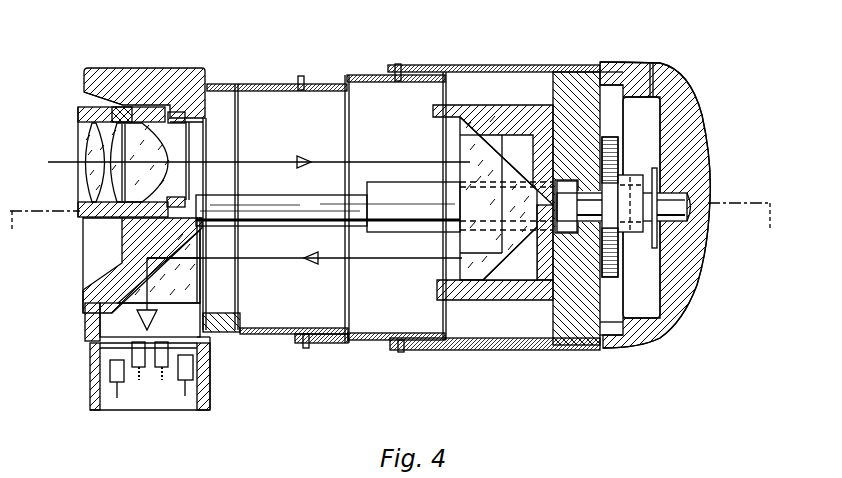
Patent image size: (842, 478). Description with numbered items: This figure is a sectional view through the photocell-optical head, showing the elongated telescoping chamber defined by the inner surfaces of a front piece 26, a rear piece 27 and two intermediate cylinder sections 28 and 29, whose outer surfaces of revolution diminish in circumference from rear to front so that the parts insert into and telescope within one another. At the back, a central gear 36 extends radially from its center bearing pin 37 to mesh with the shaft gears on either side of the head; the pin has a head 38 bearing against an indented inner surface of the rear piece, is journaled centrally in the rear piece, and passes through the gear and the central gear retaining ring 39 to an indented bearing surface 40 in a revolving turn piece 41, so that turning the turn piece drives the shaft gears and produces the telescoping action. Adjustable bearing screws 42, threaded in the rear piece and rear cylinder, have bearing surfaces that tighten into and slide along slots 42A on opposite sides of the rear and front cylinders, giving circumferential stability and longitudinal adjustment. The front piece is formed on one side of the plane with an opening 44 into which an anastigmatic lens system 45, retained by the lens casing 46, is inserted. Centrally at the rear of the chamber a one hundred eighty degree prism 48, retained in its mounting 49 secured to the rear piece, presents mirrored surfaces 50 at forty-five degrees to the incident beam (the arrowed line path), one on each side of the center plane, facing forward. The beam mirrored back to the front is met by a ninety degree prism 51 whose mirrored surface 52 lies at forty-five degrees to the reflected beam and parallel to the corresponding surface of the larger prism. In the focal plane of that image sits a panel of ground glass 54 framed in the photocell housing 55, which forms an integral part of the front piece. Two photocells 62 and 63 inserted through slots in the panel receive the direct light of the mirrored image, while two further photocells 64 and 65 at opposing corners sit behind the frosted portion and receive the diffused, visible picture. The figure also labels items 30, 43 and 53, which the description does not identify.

The front piece 26 is at (143, 70).
The rear piece 27 is at (495, 64).
The intermediate cylinder section 28 is at (388, 82).
The intermediate cylinder section 29 is at (292, 92).
The lens barrel 30 is at (248, 203).
The central gear 36 is at (616, 182).
The center bearing pin 37 is at (668, 206).
The head 38 is at (528, 292).
The central gear retaining ring 39 is at (612, 185).
The indented bearing surface 40 is at (706, 187).
The revolving turn piece 41 is at (697, 133).
The adjustable bearing screws 42 is at (305, 72).
The slots 42A is at (258, 82).
The section line 43 is at (390, 231).
The opening 44 is at (120, 106).
The anastigmatic lens system 45 is at (78, 178).
The lens casing 46 is at (82, 121).
The 180° prism 48 is at (470, 148).
The mounting 49 is at (498, 115).
The reflecting or mirrored surfaces 50 is at (486, 151).
The 90° prism 51 is at (190, 261).
The mirrored surface 52 is at (162, 322).
The prism support 53 is at (128, 245).
The panel of ground glass 54 is at (204, 367).
The photocell housing 55 is at (96, 386).
The photocell 62 is at (139, 382).
The photocell 63 is at (163, 382).
The photocell 64 is at (116, 384).
The photocell 65 is at (187, 398).